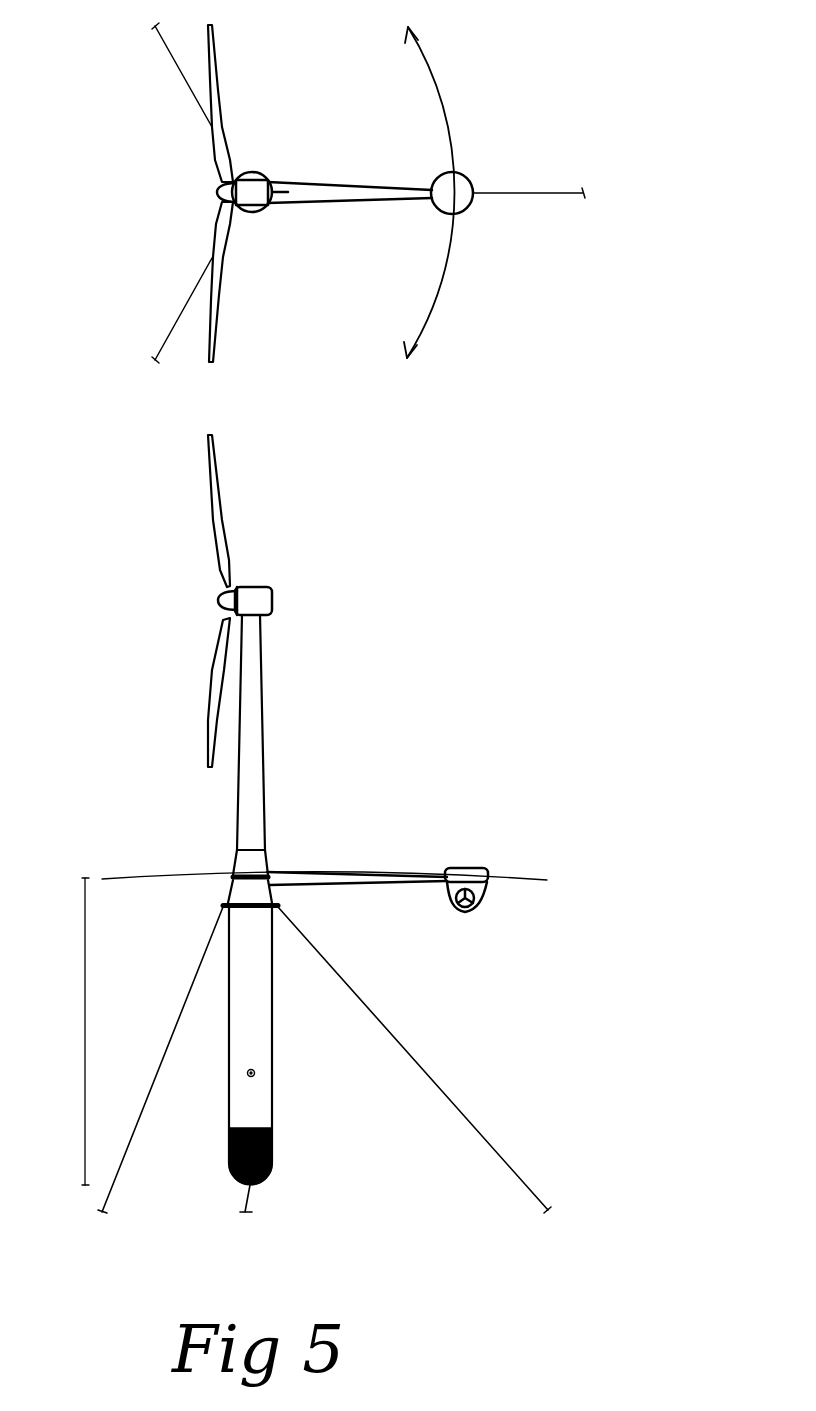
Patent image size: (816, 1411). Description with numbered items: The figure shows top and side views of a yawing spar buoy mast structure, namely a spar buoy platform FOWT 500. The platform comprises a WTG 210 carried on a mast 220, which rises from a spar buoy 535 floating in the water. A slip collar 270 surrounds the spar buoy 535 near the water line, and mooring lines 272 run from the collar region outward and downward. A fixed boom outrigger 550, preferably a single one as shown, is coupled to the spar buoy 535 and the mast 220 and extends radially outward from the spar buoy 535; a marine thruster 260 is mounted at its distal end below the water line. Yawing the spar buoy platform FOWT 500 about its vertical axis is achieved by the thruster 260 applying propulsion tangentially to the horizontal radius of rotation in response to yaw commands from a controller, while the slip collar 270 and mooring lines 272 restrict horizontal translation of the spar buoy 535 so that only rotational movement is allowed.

The WTG 210 is at (272, 591).
The mast 220 is at (263, 743).
The marine thruster 260 is at (473, 205).
The slip collar 270 is at (222, 906).
The mooring lines 272 is at (477, 1127).
The spar buoy platform FOWT 500 is at (365, 642).
The spar buoy 535 is at (62, 1031).
The fixed boom outrigger 550 is at (322, 183).